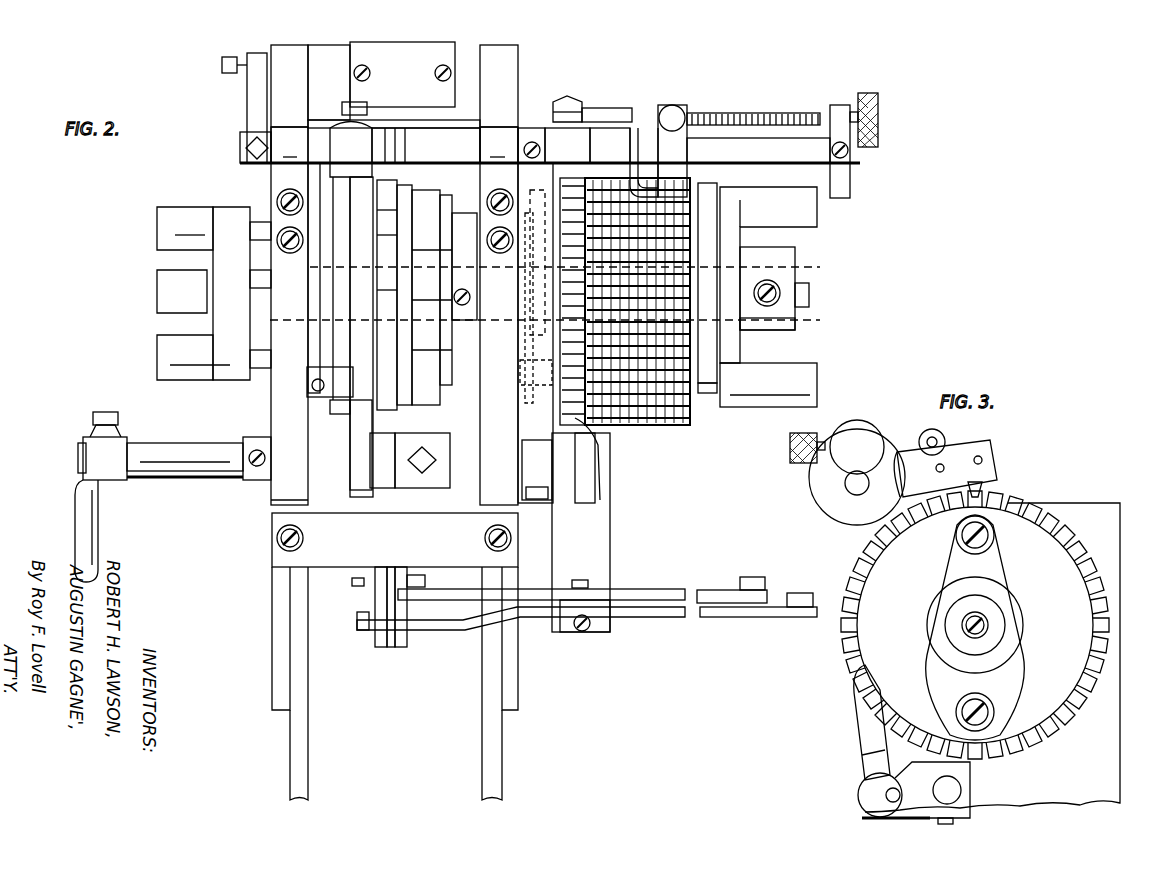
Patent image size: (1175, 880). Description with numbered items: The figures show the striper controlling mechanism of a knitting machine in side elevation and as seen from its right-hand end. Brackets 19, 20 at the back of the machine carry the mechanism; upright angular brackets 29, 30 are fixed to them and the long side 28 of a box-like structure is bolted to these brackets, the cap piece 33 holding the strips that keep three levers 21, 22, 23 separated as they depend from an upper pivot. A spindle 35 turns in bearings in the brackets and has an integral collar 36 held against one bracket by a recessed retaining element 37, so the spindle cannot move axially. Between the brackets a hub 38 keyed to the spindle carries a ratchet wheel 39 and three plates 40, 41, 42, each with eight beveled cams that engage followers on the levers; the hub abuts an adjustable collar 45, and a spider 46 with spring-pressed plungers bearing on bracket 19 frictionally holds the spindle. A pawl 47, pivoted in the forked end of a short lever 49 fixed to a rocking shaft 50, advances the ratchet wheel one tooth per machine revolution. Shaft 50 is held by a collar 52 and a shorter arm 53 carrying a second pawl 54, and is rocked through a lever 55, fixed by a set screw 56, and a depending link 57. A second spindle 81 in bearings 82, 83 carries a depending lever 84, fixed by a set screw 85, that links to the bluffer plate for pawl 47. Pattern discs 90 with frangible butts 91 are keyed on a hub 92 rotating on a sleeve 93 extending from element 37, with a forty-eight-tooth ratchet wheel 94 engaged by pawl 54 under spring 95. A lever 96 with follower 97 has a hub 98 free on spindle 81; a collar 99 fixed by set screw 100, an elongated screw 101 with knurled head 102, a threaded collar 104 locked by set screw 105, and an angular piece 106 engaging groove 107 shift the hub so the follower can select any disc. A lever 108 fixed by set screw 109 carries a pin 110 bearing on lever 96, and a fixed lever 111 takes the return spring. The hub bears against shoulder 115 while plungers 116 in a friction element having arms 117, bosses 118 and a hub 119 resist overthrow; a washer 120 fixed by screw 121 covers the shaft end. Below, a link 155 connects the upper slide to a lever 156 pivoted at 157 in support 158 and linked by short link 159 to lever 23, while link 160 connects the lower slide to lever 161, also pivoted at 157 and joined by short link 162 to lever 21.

In FIG. 2, the bracket 19 is at (275, 592).
In FIG. 2, the bracket 20 is at (512, 640).
In FIG. 2, the lever 21 is at (375, 592).
In FIG. 2, the lever 22 is at (391, 645).
In FIG. 2, the yarn guiding finger actuating lever 23 is at (407, 640).
In FIG. 2, the side 28 is at (470, 70).
In FIG. 2, the angular bracket 29 is at (289, 275).
In FIG. 2, the angular bracket 30 is at (520, 100).
In FIG. 2, the cap piece 33 is at (402, 74).
In FIG. 2, the spindle 35 is at (528, 310).
In FIG. 2, the collar 36 is at (530, 322).
In FIG. 2, the retaining element 37 is at (540, 380).
In FIG. 2, the hub 38 is at (312, 300).
In FIG. 2, the ratchet wheel 39 is at (362, 337).
In FIG. 2, the plate 40 is at (382, 230).
In FIG. 2, the plate 41 is at (392, 258).
In FIG. 2, the plate 42 is at (402, 330).
In FIG. 2, the collar 45 is at (462, 250).
In FIG. 2, the spider 46 is at (214, 293).
In FIG. 2, the pawl 47 is at (352, 445).
In FIG. 2, the lever 49 is at (410, 460).
In FIG. 2, the shaft 50 is at (188, 455).
In FIG. 3, the shaft 50 is at (958, 785).
In FIG. 2, the collar 52 is at (258, 438).
In FIG. 2, the arm 53 is at (545, 480).
In FIG. 3, the arm 53 is at (970, 802).
In FIG. 2, the pawl 54 is at (580, 425).
In FIG. 3, the pawl 54 is at (858, 727).
In FIG. 2, the lever 55 is at (112, 455).
In FIG. 2, the set screw 56 is at (110, 413).
In FIG. 2, the link 57 is at (88, 520).
In FIG. 2, the spindle 81 is at (452, 150).
In FIG. 3, the spindle 81 is at (857, 490).
In FIG. 2, the bearing 82 is at (499, 145).
In FIG. 2, the bearing 83 is at (289, 145).
In FIG. 2, the lever 84 is at (335, 308).
In FIG. 2, the set screw 85 is at (350, 103).
In FIG. 2, the pattern discs 90 is at (672, 427).
In FIG. 3, the pattern discs 90 is at (1118, 582).
In FIG. 3, the butts 91 is at (1030, 508).
In FIG. 2, the hub 92 is at (697, 412).
In FIG. 3, the hub 92 is at (994, 625).
In FIG. 2, the sleeve 93 is at (708, 275).
In FIG. 2, the ratchet wheel 94 is at (560, 207).
In FIG. 3, the spring 95 is at (862, 816).
In FIG. 3, the lever 96 is at (947, 468).
In FIG. 3, the follower 97 is at (982, 487).
In FIG. 2, the hub 98 is at (632, 130).
In FIG. 2, the collar 99 is at (840, 110).
In FIG. 3, the collar 99 is at (812, 480).
In FIG. 2, the set screw 100 is at (846, 155).
In FIG. 2, the screw 101 is at (795, 114).
In FIG. 2, the knurled head 102 is at (880, 116).
In FIG. 3, the knurled head 102 is at (837, 447).
In FIG. 2, the collar 104 is at (688, 120).
In FIG. 2, the set screw 105 is at (672, 115).
In FIG. 2, the angular piece 106 is at (690, 152).
In FIG. 2, the groove 107 is at (632, 140).
In FIG. 2, the lever 108 is at (555, 140).
In FIG. 3, the lever 108 is at (910, 442).
In FIG. 2, the set screw 109 is at (570, 100).
In FIG. 2, the pin 110 is at (592, 118).
In FIG. 3, the pin 110 is at (935, 442).
In FIG. 2, the lever 111 is at (247, 103).
In FIG. 2, the shoulder 115 is at (538, 308).
In FIG. 2, the plungers 116 is at (706, 395).
In FIG. 2, the arms 117 is at (735, 240).
In FIG. 3, the arms 117 is at (950, 563).
In FIG. 2, the bosses 118 is at (805, 370).
In FIG. 2, the hub 119 is at (792, 258).
In FIG. 2, the washer 120 is at (800, 320).
In FIG. 2, the screw 121 is at (810, 293).
In FIG. 2, the link 155 is at (765, 583).
In FIG. 2, the lever 156 is at (640, 592).
In FIG. 2, the pivot 157 is at (580, 580).
In FIG. 2, the support 158 is at (610, 548).
In FIG. 2, the short link 159 is at (420, 592).
In FIG. 2, the link 160 is at (812, 606).
In FIG. 2, the lever 161 is at (640, 613).
In FIG. 2, the short link 162 is at (357, 620).